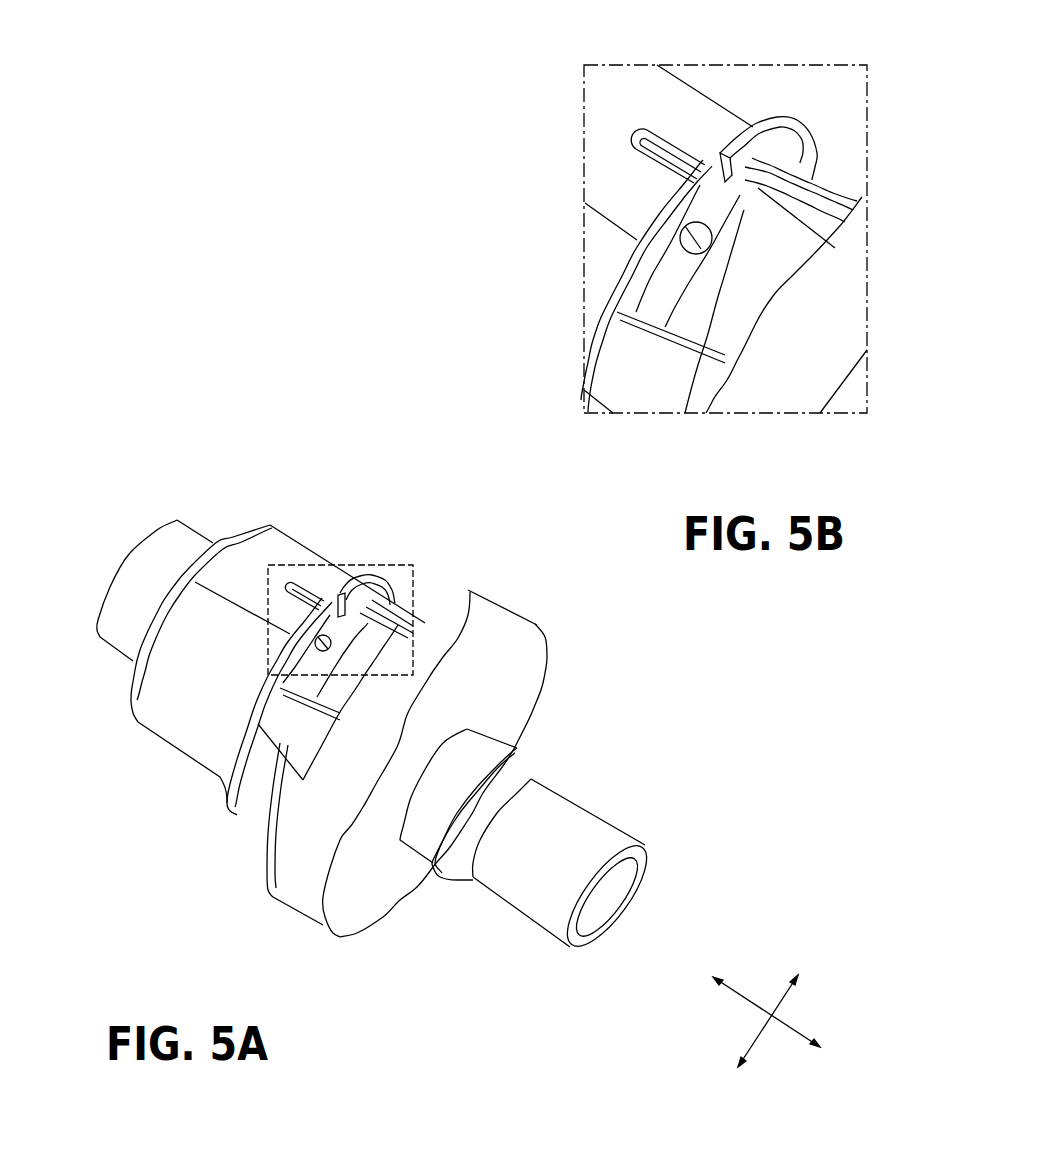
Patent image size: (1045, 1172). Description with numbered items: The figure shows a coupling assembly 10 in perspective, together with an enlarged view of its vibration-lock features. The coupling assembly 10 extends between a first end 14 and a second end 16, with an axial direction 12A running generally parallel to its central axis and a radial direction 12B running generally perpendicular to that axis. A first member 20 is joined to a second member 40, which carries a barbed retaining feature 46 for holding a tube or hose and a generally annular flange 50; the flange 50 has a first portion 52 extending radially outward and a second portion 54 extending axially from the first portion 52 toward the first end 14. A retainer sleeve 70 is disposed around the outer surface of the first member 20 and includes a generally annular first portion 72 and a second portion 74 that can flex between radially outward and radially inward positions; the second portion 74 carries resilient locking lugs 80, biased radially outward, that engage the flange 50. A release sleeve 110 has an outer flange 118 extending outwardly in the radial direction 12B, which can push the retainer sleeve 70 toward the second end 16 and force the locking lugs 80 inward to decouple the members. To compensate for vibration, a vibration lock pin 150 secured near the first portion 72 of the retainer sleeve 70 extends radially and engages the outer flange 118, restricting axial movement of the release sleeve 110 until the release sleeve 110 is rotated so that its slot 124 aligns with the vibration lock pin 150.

In FIG. 5A, the coupling assembly 10 is at (258, 458).
In FIG. 5A, the axial direction 12A is at (775, 1037).
In FIG. 5A, the radial direction 12B is at (790, 1008).
In FIG. 5A, the first end 14 is at (88, 560).
In FIG. 5A, the second end 16 is at (672, 883).
In FIG. 5A, the first member 20 is at (163, 545).
In FIG. 5A, the second member 40 is at (597, 797).
In FIG. 5A, the retaining feature 46 is at (450, 880).
In FIG. 5A, the flange 50 is at (521, 605).
In FIG. 5B, the flange 50 is at (782, 421).
In FIG. 5A, the first portion 52 is at (533, 702).
In FIG. 5A, the second portion 54 is at (495, 598).
In FIG. 5A, the retainer sleeve 70 is at (403, 607).
In FIG. 5B, the retainer sleeve 70 is at (833, 180).
In FIG. 5B, the first portion 72 is at (650, 307).
In FIG. 5B, the second portion 74 is at (718, 323).
In FIG. 5A, the locking lug 80 is at (265, 803).
In FIG. 5B, the locking lug 80 is at (757, 277).
In FIG. 5A, the release sleeve 110 is at (303, 543).
In FIG. 5B, the release sleeve 110 is at (605, 117).
In FIG. 5A, the outer flange 118 is at (233, 817).
In FIG. 5B, the slot 124 is at (677, 140).
In FIG. 5B, the vibration lock pin 150 is at (688, 249).